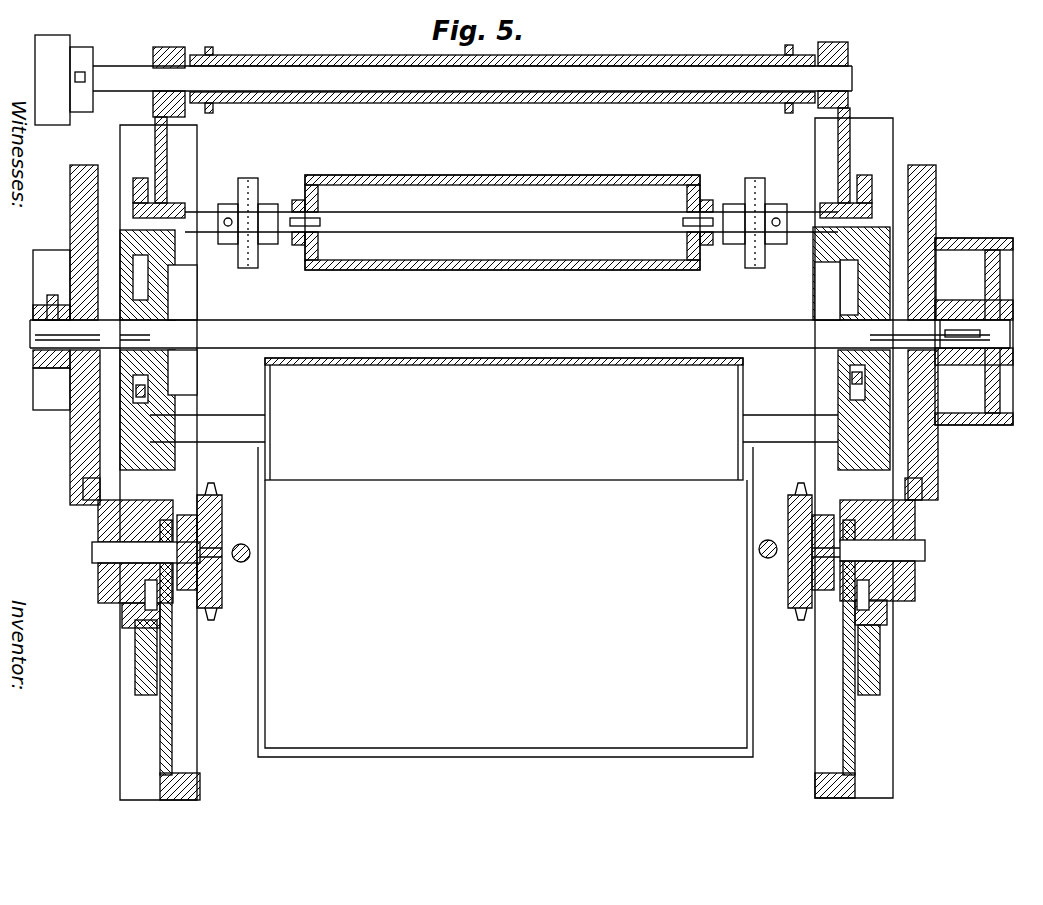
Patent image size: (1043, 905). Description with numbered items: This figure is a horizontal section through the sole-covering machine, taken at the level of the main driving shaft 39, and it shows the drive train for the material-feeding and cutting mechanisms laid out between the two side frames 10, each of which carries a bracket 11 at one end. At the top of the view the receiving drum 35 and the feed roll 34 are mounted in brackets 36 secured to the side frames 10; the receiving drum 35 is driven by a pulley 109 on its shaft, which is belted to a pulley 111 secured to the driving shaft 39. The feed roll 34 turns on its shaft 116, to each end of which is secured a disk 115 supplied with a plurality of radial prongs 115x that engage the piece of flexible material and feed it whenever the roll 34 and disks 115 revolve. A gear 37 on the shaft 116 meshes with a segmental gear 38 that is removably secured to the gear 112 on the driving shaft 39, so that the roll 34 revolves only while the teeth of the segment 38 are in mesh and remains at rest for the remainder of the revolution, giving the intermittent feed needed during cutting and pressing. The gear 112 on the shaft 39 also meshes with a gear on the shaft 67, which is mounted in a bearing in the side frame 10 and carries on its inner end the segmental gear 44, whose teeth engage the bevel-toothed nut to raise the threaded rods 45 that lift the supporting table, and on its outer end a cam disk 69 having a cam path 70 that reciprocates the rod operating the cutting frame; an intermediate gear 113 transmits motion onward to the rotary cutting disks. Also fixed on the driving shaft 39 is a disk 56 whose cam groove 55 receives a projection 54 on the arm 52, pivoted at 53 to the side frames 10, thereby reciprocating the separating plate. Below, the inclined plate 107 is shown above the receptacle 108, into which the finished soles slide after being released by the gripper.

The side frame 10 is at (172, 725).
The bracket 11 is at (195, 788).
The feed roll 34 is at (660, 175).
The receiving drum 35 is at (315, 58).
The bracket 36 is at (168, 142).
The gear 37 is at (140, 180).
The segmental gear 38 is at (148, 392).
The main driving shaft 39 is at (602, 320).
The segmental gear 44 is at (218, 608).
The threaded rod 45 is at (241, 544).
The arm 52 is at (80, 448).
The pivot 53 is at (235, 415).
The projection 54 is at (95, 505).
The cam groove 55 is at (83, 488).
The disk 56 is at (82, 172).
The shaft 67 is at (95, 553).
The cam disk 69 is at (140, 680).
The cam path 70 is at (155, 605).
The plate 107 is at (358, 360).
The receptacle 108 is at (358, 748).
The pulley 109 is at (50, 115).
The pulley 111 is at (40, 250).
The gear 112 is at (55, 406).
The intermediate gear 113 is at (125, 605).
The disk 115 is at (250, 200).
The radial prong 115x is at (250, 178).
The shaft 116 is at (460, 235).